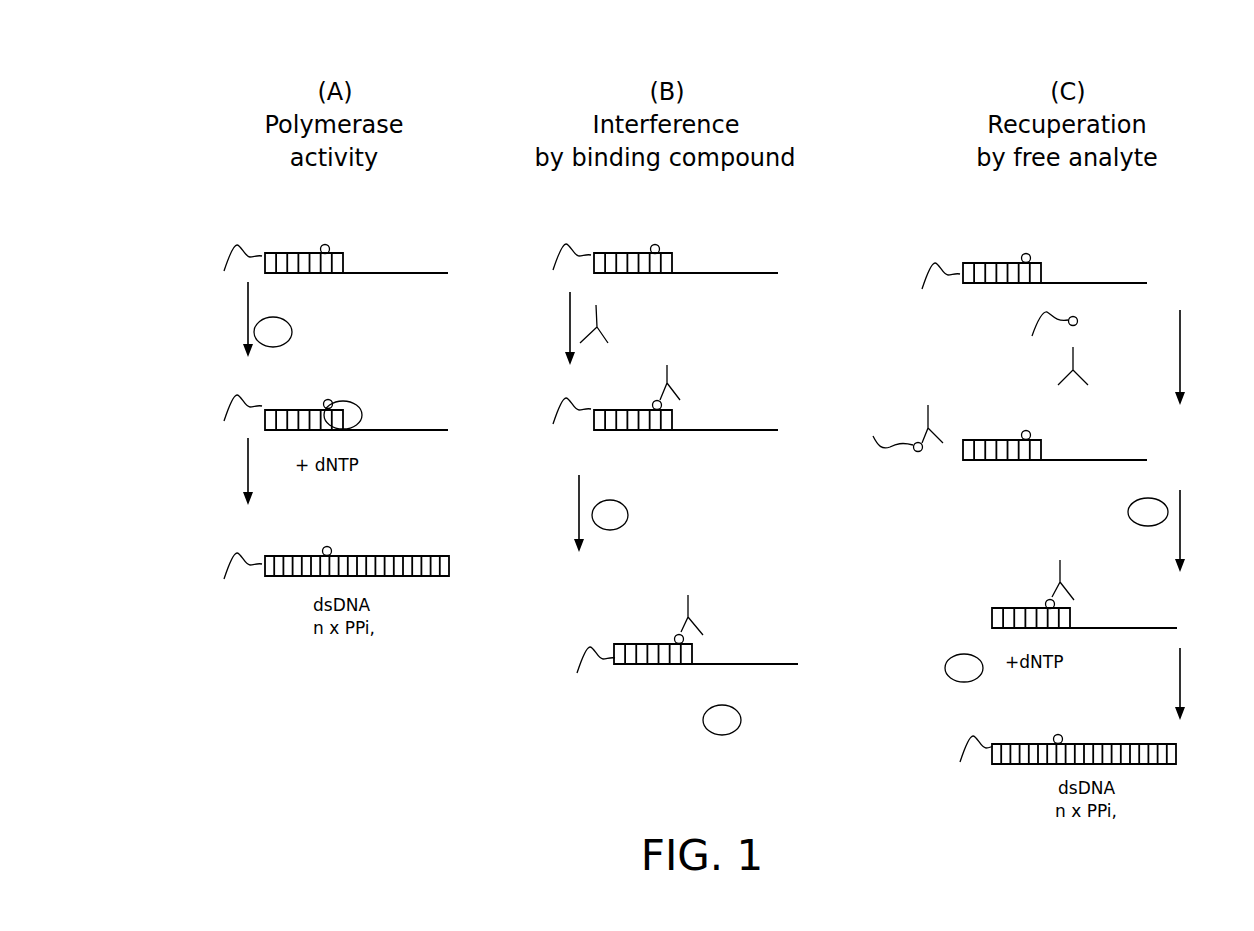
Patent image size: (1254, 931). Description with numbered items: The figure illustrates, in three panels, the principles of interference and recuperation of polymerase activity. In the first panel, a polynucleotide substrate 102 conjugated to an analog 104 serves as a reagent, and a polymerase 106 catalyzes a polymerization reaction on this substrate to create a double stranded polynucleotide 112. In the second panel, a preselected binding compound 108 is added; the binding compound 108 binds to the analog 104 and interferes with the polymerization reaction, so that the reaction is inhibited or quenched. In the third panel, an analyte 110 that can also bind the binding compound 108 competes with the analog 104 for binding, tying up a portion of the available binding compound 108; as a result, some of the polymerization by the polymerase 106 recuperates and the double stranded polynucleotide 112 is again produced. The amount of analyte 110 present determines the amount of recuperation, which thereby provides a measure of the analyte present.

The polynucleotide substrate 102 is at (678, 469).
The analog 104 is at (327, 245).
The polymerase 106 is at (289, 321).
The binding compound 108 is at (600, 327).
The analyte 110 is at (955, 382).
The double stranded polynucleotide 112 is at (678, 667).